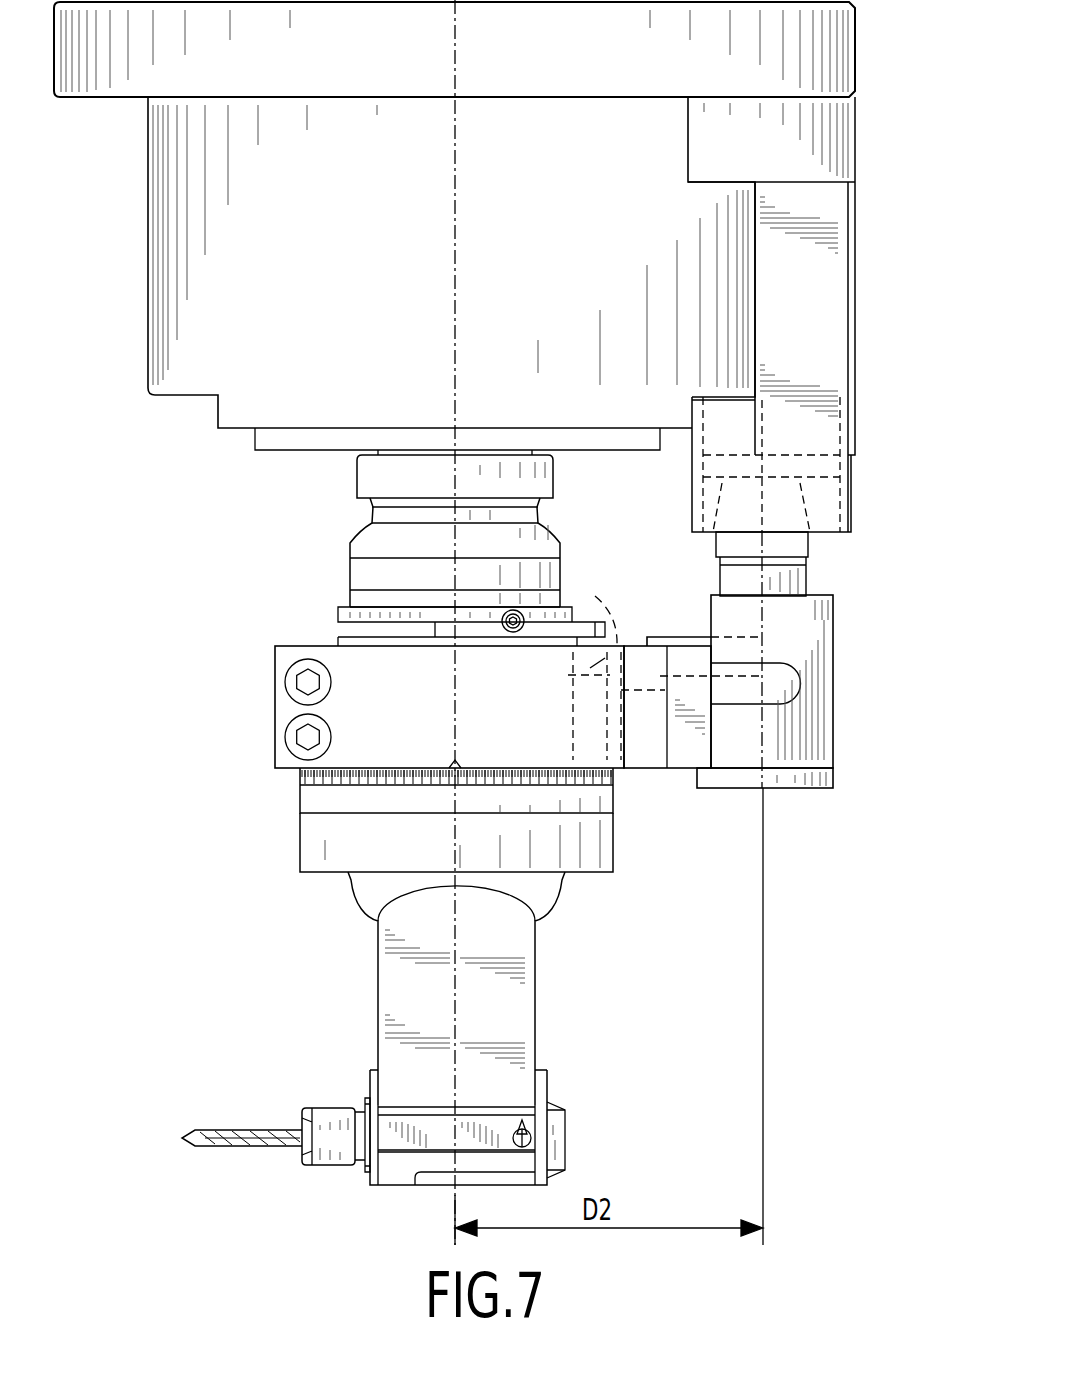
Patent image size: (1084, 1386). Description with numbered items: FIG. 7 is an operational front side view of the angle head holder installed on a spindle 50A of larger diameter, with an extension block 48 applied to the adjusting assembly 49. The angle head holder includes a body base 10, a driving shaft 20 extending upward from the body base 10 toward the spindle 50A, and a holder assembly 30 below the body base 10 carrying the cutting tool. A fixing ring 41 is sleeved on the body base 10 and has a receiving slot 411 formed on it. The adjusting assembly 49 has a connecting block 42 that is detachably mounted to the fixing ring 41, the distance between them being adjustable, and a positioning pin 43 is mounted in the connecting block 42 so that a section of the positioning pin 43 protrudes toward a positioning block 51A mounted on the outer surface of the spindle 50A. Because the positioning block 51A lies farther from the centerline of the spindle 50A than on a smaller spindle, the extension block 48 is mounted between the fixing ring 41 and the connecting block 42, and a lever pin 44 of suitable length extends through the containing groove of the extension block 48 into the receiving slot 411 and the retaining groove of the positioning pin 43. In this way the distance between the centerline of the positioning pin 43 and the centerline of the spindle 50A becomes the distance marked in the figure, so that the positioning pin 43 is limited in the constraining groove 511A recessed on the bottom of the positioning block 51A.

The body base 10 is at (340, 845).
The driving shaft 20 is at (375, 478).
The holder assembly 30 is at (335, 1110).
The fixing ring 41 is at (312, 620).
The receiving slot 411 is at (594, 662).
The connecting block 42 is at (852, 620).
The positioning pin 43 is at (830, 555).
The lever pin 44 is at (680, 620).
The extension block 48 is at (642, 786).
The adjusting assembly 49 is at (860, 820).
The spindle 50A is at (181, 430).
The positioning block 51A is at (860, 335).
The constraining groove 511A is at (827, 468).